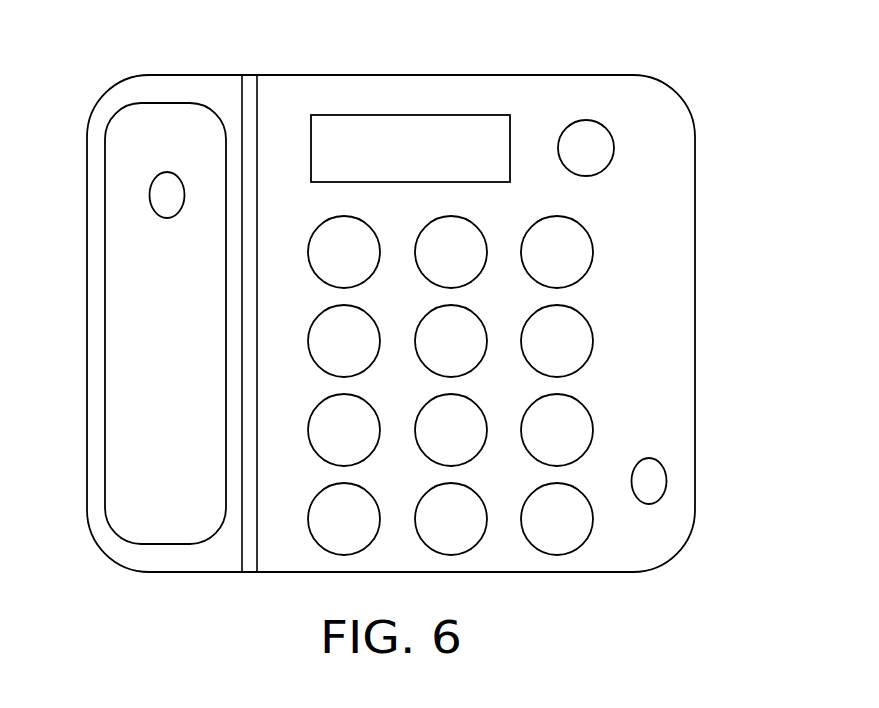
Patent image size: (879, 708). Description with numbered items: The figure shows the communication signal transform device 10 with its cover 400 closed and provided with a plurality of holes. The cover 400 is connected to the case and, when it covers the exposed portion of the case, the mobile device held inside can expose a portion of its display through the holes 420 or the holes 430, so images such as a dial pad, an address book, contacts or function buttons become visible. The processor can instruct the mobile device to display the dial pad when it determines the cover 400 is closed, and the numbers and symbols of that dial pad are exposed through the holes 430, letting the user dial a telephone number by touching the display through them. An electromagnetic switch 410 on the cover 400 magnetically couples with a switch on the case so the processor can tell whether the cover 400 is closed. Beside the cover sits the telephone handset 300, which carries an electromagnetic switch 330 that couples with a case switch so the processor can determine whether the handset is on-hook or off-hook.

The communication signal transform device 10 is at (425, 295).
The telephone handset 300 is at (105, 243).
The electromagnetic switch 330 is at (160, 195).
The cover 400 is at (447, 73).
The electromagnetic switch 410 is at (652, 481).
The holes 420 is at (583, 121).
The holes 430 is at (593, 252).